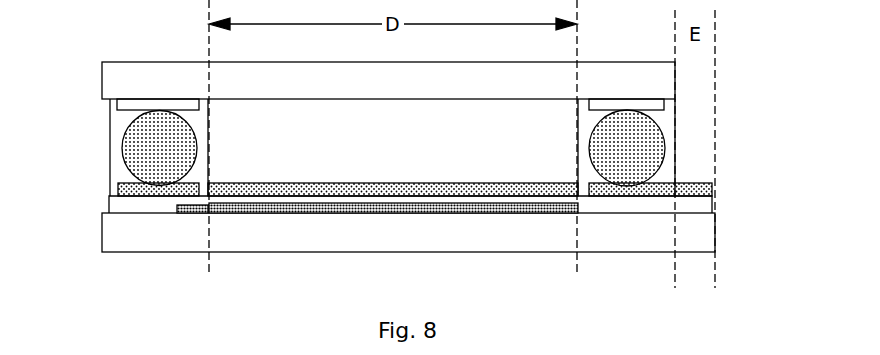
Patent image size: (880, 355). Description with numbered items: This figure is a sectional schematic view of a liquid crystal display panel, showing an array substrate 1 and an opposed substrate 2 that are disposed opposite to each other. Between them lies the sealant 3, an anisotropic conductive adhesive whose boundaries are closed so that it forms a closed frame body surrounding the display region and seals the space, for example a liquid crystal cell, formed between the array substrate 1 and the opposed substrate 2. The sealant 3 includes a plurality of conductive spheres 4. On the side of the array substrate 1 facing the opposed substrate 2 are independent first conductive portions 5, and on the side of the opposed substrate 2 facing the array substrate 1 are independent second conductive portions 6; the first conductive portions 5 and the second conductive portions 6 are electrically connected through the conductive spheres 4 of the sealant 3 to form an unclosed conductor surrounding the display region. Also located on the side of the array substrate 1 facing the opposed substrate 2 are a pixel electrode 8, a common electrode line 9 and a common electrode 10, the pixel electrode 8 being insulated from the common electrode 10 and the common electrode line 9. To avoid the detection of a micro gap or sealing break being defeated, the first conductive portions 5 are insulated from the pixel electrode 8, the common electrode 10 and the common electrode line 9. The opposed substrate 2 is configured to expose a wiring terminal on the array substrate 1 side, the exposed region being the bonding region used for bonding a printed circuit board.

The array substrate 1 is at (408, 247).
The opposed substrate 2 is at (388, 60).
The sealant 3 is at (118, 122).
The conductive spheres 4 is at (140, 152).
The first conductive portions 5 is at (137, 190).
The second conductive portions 6 is at (135, 104).
The pixel electrode 8 is at (393, 175).
The common electrode line 9 is at (178, 241).
The common electrode 10 is at (393, 242).